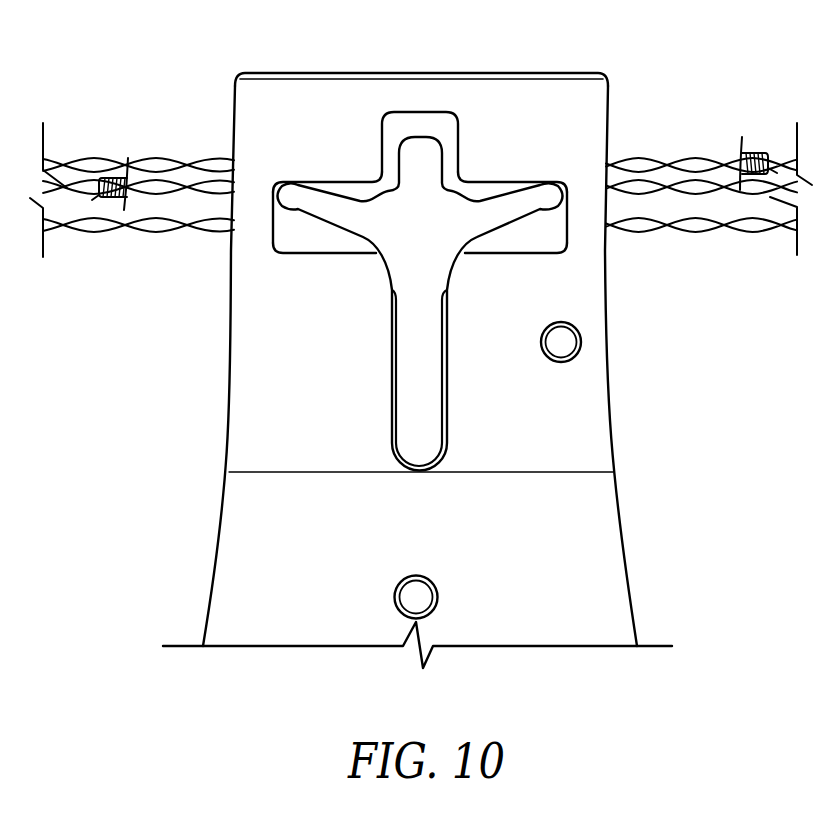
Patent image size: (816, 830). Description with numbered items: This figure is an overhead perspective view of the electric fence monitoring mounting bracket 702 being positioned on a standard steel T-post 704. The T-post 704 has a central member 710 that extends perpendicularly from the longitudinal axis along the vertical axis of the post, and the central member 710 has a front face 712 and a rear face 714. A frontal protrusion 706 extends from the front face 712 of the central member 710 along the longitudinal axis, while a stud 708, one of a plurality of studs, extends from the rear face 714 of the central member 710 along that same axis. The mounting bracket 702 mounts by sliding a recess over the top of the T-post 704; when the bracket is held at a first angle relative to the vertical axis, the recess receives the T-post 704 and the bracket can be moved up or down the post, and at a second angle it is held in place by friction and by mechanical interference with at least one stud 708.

The mounting bracket 702 is at (582, 557).
The T-post 704 is at (437, 217).
The frontal protrusion 706 is at (420, 437).
The stud 708 is at (420, 140).
The central member 710 is at (285, 195).
The front face 712 is at (297, 218).
The rear face 714 is at (339, 197).